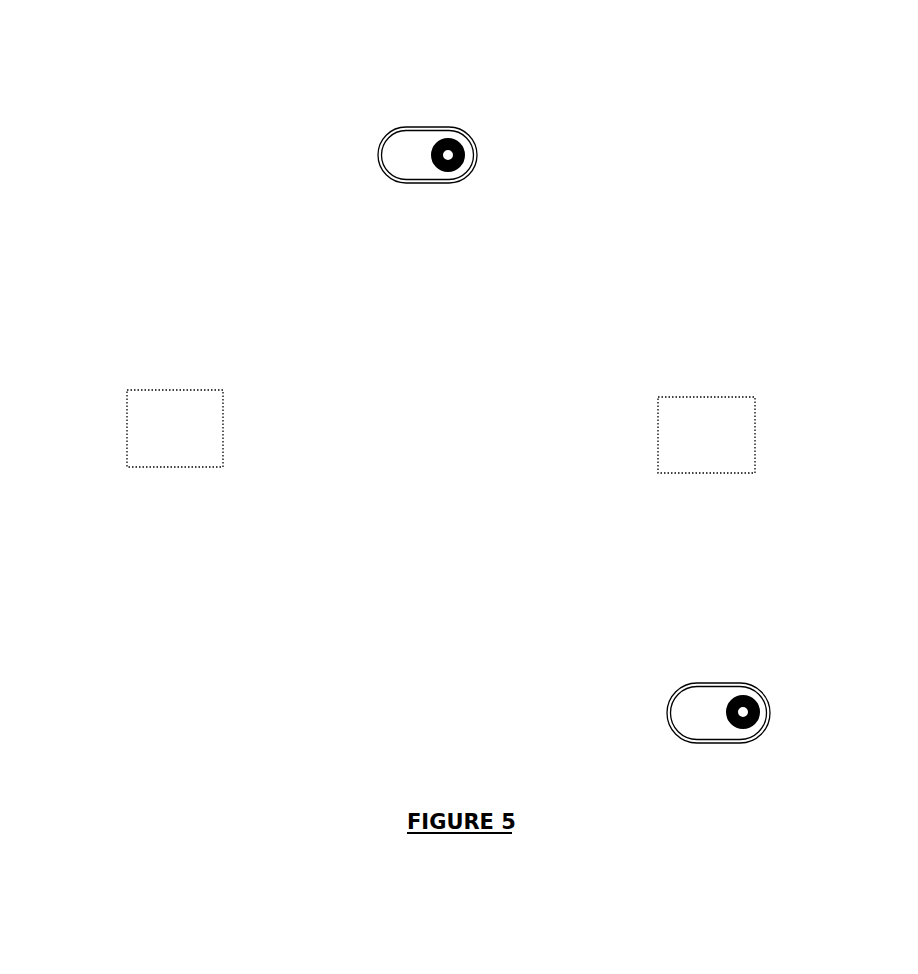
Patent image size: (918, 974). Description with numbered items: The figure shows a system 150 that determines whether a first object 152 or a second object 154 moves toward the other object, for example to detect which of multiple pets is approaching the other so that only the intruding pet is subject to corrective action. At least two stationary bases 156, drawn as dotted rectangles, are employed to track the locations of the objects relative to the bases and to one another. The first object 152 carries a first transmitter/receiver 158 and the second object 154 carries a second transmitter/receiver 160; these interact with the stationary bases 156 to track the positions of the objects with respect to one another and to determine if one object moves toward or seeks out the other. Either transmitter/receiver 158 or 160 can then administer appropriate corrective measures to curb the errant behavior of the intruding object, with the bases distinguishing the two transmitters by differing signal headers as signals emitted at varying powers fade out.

The system 150 is at (125, 158).
The first object 152 is at (400, 143).
The second object 154 is at (687, 702).
The stationary bases 156 is at (207, 422).
The first transmitter/receiver 158 is at (463, 148).
The second transmitter/receiver 160 is at (750, 697).